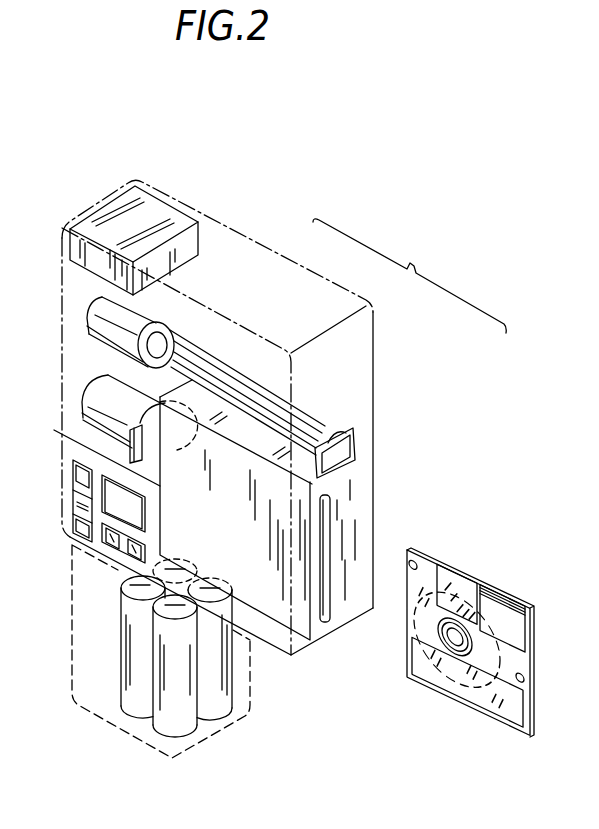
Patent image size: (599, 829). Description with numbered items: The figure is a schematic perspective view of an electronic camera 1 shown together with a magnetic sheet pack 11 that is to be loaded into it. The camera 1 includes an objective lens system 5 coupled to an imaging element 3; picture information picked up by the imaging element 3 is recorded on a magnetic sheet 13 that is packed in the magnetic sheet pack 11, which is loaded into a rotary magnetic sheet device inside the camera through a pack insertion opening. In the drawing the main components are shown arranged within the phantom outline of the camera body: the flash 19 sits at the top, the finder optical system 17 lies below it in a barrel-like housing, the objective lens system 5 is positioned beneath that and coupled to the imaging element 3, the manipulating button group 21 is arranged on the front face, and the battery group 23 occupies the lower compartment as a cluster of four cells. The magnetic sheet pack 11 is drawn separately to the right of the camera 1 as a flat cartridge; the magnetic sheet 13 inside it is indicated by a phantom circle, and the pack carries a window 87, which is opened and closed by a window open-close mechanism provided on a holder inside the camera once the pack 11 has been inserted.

The electronic camera 1 is at (245, 225).
The imaging element 3 is at (56, 431).
The objective lens system 5 is at (93, 398).
The magnetic sheet pack 11 is at (520, 595).
The magnetic sheet 13 is at (484, 698).
The finder optical system 17 is at (88, 322).
The flash 19 is at (110, 208).
The manipulating button group 21 is at (73, 506).
The battery group 23 is at (228, 660).
The window 87 is at (445, 565).